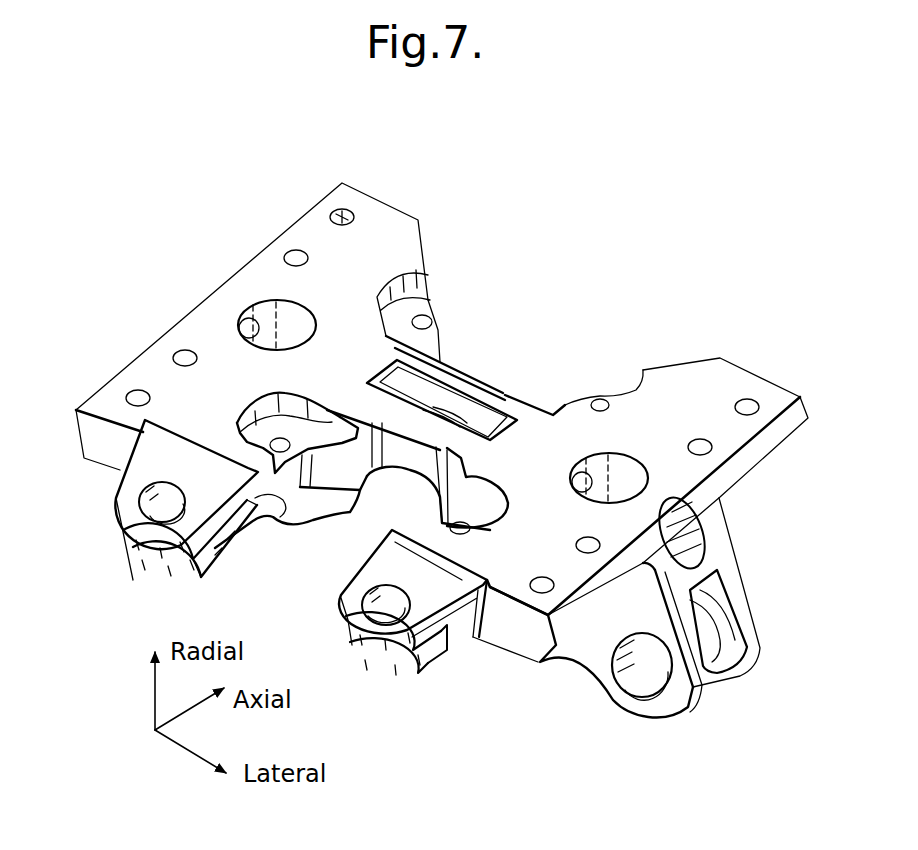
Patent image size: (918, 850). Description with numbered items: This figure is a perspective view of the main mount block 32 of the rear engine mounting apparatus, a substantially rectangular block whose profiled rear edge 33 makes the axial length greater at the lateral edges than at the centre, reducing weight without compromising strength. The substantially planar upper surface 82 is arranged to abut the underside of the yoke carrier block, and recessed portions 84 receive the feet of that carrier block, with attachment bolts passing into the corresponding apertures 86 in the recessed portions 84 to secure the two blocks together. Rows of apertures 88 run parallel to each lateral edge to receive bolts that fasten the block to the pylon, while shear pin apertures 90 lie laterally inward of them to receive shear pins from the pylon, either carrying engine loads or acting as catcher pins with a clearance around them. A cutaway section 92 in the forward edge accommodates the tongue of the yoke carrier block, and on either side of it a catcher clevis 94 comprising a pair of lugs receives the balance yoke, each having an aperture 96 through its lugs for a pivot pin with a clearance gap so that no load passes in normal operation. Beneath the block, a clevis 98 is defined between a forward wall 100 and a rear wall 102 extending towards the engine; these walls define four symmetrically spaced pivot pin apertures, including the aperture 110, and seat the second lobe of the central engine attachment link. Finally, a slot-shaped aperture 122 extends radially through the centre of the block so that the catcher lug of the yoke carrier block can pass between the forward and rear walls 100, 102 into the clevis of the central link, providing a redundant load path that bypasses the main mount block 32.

The main mount block 32 is at (160, 215).
The profiled rear edge 33 is at (683, 360).
The upper surface 82 is at (700, 397).
The recessed portions 84 is at (412, 298).
The apertures 86 is at (435, 320).
The apertures 88 is at (297, 250).
The shear pin apertures 90 is at (263, 302).
The cutaway section 92 is at (345, 525).
The catcher clevises 94 is at (147, 533).
The aperture 96 is at (170, 506).
The clevis 98 is at (726, 650).
The forward wall 100 is at (680, 697).
The rear wall 102 is at (720, 540).
The aperture 110 is at (648, 660).
The slot-shaped aperture 122 is at (417, 387).